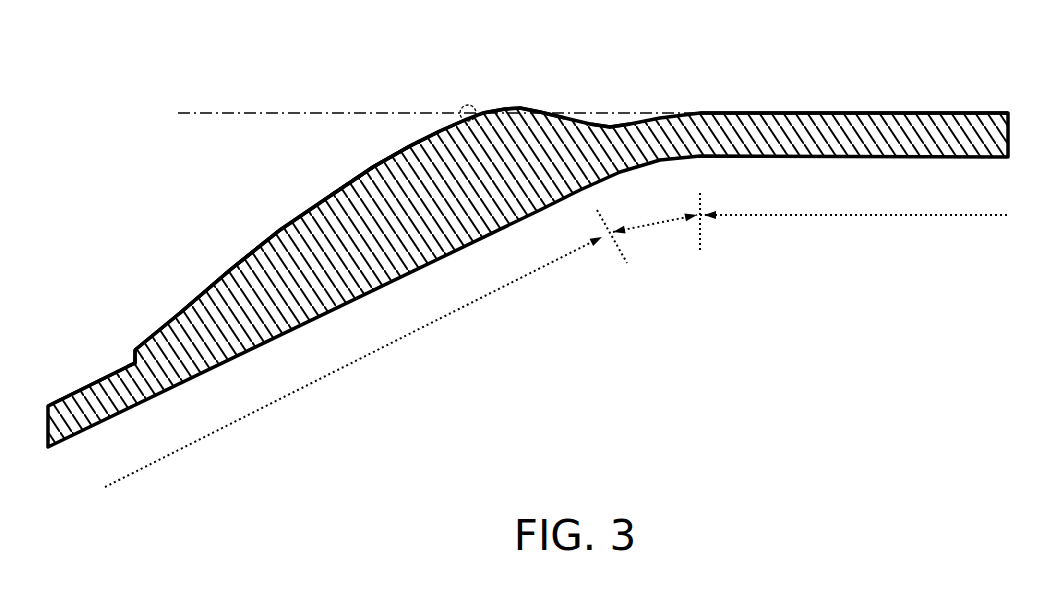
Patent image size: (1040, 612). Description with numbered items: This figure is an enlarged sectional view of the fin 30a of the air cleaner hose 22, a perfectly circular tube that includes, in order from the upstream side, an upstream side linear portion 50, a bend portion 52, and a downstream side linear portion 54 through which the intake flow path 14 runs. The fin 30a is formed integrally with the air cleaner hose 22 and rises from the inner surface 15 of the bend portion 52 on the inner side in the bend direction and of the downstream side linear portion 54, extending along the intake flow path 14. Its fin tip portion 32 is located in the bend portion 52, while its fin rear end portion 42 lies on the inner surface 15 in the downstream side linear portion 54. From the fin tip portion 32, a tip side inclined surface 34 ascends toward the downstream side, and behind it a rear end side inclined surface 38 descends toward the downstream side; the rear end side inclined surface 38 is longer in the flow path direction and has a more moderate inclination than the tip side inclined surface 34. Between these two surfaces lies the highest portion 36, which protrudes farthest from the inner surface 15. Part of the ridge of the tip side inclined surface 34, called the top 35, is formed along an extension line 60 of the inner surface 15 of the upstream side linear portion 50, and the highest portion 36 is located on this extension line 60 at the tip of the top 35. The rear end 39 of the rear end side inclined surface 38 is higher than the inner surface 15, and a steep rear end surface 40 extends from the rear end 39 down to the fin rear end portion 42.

The intake flow path 14 is at (338, 56).
The inner surface 15 is at (908, 113).
The air cleaner hose 22 is at (848, 92).
The fin 30a is at (243, 230).
The fin tip portion 32 is at (612, 125).
The tip side inclined surface 34 is at (540, 106).
The top 35 is at (390, 155).
The highest portion 36 is at (468, 104).
The rear end side inclined surface 38 is at (340, 188).
The rear end 39 is at (135, 348).
The rear end surface 40 is at (130, 356).
The fin rear end portion 42 is at (123, 360).
The upstream side linear portion 50 is at (820, 220).
The bend portion 52 is at (658, 230).
The downstream side linear portion 54 is at (397, 343).
The extension line 60 is at (227, 110).